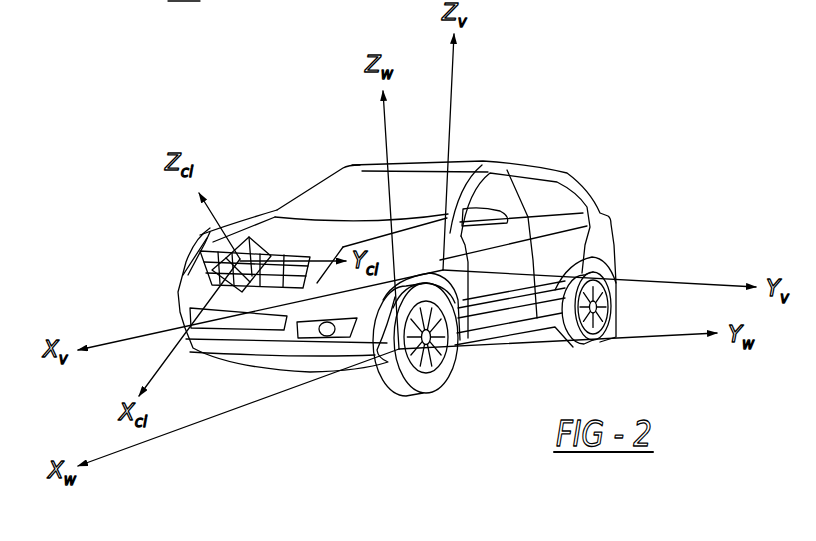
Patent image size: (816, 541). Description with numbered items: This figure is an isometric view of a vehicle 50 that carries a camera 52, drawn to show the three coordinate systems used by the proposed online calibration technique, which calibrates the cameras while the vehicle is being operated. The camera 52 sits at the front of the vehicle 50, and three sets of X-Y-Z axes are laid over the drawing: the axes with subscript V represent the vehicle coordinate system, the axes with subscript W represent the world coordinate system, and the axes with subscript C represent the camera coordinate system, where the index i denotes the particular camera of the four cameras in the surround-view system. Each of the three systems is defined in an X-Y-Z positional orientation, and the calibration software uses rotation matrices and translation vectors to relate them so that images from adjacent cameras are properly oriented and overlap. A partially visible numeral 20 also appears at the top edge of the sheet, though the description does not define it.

The vehicle system 20 is at (183, 4).
The vehicle 50 is at (566, 104).
The camera 52 is at (267, 254).